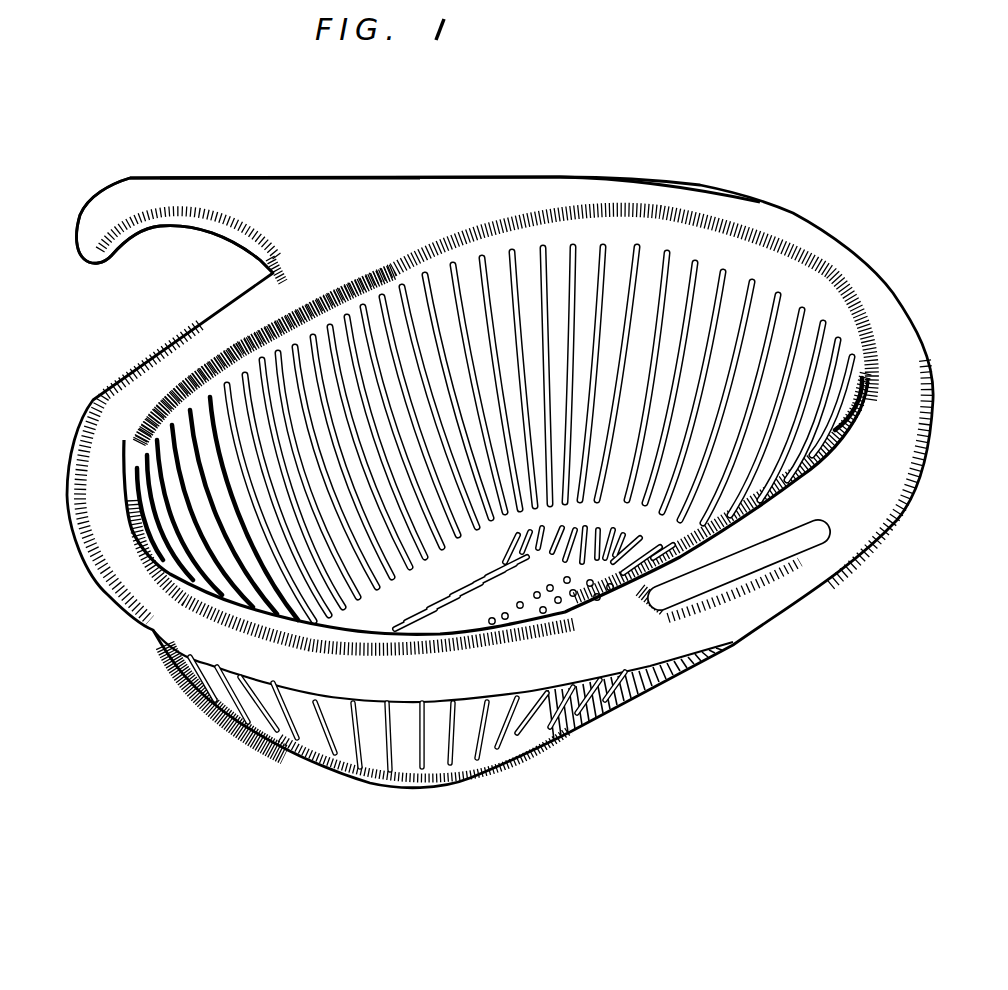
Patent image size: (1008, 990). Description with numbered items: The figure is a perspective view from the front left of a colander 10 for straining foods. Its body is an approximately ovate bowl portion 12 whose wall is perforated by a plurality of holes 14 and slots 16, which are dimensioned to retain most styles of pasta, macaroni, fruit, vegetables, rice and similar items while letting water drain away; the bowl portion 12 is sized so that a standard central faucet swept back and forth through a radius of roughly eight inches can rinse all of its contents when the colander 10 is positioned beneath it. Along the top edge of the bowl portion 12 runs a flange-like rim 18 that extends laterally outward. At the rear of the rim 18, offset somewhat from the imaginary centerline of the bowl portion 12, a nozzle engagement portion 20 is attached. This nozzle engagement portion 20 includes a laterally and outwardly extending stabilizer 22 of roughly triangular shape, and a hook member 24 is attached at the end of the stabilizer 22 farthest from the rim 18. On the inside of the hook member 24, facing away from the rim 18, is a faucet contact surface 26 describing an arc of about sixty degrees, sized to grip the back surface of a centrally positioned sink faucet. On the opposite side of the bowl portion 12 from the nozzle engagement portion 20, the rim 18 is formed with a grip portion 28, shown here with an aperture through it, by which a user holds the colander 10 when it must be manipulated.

The colander 10 is at (154, 756).
The bowl portion 12 is at (278, 747).
The holes 14 is at (537, 596).
The slots 16 is at (377, 781).
The flange-like rim 18 is at (733, 194).
The nozzle engagement portion 20 is at (275, 162).
The stabilizer 22 is at (310, 178).
The hook member 24 is at (203, 176).
The faucet contact surface 26 is at (147, 222).
The grip portion 28 is at (741, 582).